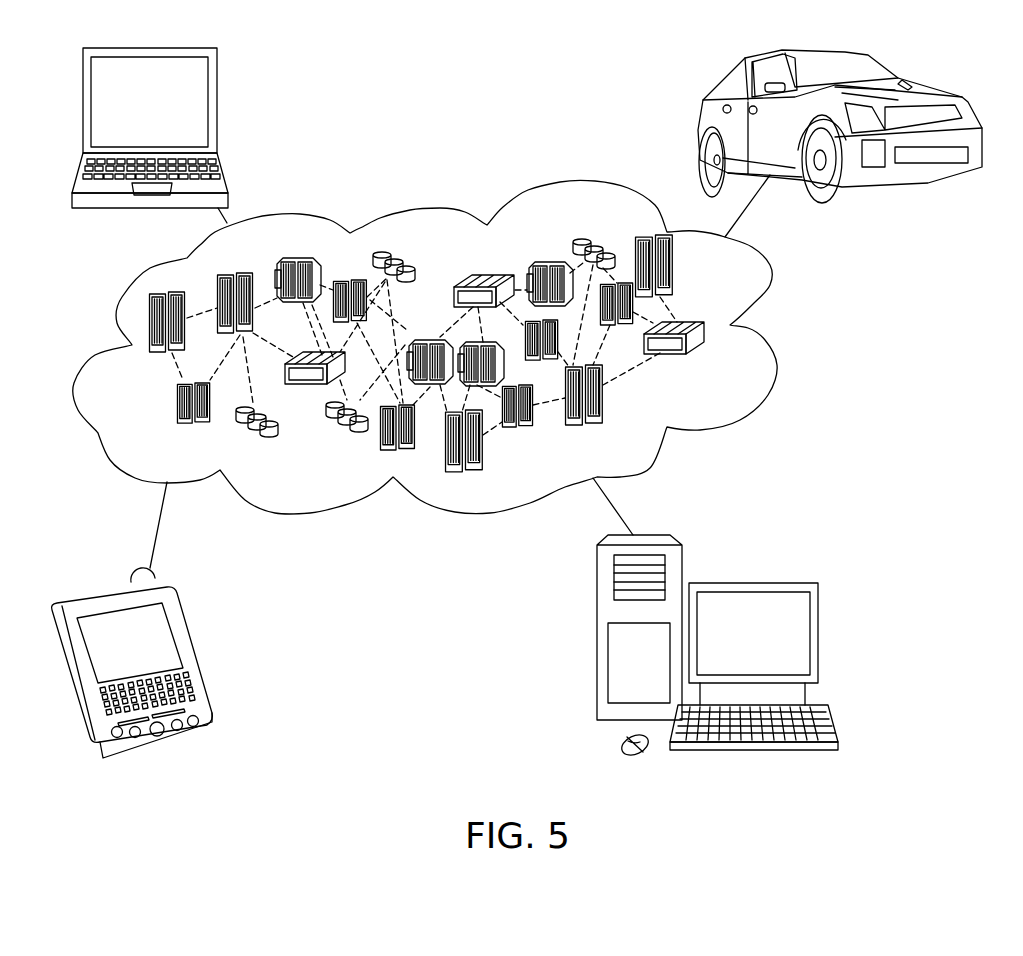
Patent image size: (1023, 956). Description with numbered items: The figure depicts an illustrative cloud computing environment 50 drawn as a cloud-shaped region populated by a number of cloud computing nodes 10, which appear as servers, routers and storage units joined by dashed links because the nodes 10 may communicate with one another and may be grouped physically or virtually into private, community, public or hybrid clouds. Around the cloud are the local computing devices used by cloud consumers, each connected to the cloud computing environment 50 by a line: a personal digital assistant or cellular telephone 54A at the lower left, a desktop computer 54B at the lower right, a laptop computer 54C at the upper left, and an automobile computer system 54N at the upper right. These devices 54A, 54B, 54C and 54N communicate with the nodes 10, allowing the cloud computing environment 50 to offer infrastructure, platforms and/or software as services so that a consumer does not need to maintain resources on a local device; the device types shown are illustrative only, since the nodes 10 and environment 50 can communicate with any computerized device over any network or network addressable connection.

The cloud computing nodes 10 is at (718, 378).
The cloud computing environment 50 is at (773, 278).
The personal digital assistant (PDA) or cellular telephone 54A is at (185, 632).
The desktop computer 54B is at (820, 632).
The laptop computer 54C is at (217, 105).
The automobile computer system 54N is at (890, 72).